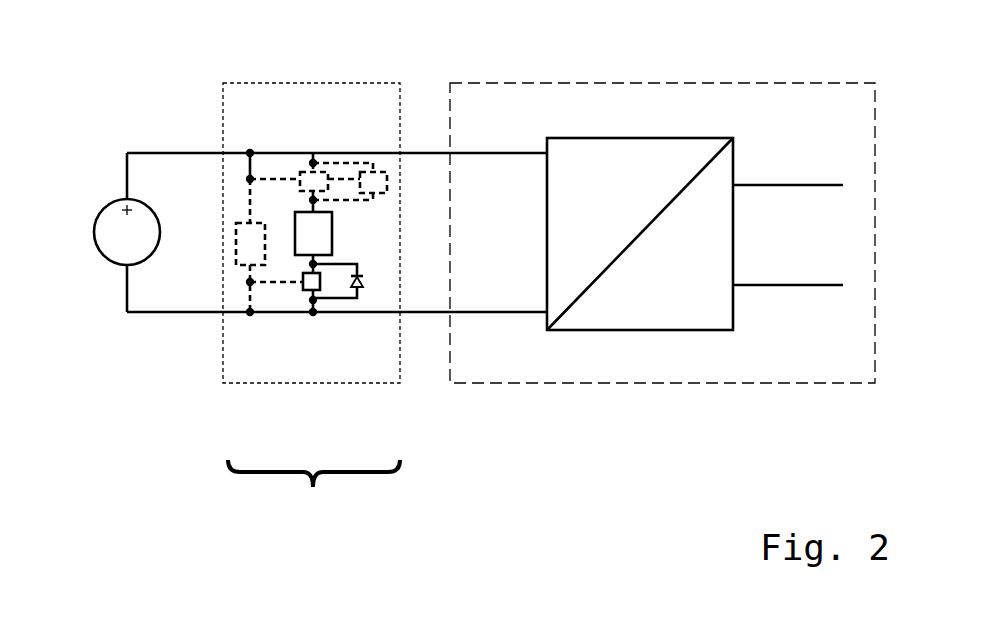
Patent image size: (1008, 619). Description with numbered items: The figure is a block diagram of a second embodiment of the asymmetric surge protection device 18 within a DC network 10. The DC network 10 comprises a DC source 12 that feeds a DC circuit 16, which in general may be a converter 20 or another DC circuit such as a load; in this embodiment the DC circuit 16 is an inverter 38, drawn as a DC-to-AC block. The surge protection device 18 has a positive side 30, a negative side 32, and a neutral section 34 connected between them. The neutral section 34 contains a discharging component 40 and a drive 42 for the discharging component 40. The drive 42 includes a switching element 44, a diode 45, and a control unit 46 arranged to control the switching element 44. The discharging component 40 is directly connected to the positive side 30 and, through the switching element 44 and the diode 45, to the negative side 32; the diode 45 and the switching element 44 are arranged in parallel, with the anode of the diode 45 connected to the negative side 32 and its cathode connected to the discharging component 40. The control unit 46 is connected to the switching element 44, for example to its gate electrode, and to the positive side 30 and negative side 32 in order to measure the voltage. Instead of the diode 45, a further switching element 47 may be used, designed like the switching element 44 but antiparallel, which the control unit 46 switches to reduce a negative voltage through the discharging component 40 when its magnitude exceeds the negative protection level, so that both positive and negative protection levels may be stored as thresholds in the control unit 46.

The DC network 10 is at (77, 306).
The DC source 12 is at (92, 232).
The DC circuit 16 is at (662, 272).
The asymmetric surge protection device 18 is at (358, 271).
The converter 20 is at (662, 272).
The positive side 30 is at (337, 78).
The negative side 32 is at (337, 384).
The neutral section 34 is at (397, 306).
The inverter 38 is at (662, 272).
The discharging component 40 is at (422, 127).
The drive 42 is at (314, 496).
The switching element 44 is at (288, 230).
The diode 45 is at (352, 362).
The control unit 46 is at (257, 341).
The further switching element 47 is at (401, 96).